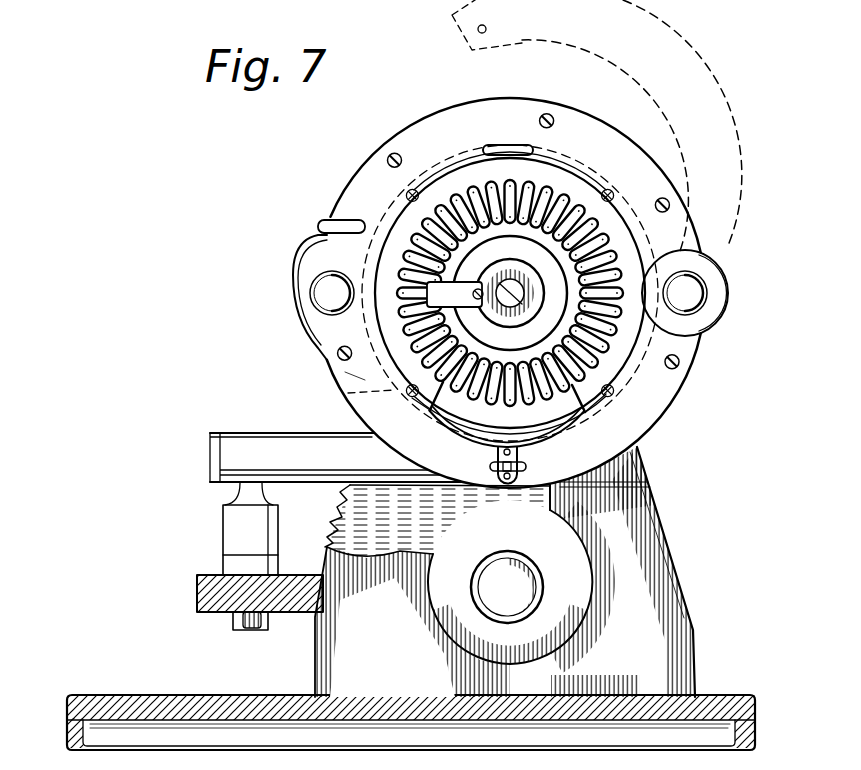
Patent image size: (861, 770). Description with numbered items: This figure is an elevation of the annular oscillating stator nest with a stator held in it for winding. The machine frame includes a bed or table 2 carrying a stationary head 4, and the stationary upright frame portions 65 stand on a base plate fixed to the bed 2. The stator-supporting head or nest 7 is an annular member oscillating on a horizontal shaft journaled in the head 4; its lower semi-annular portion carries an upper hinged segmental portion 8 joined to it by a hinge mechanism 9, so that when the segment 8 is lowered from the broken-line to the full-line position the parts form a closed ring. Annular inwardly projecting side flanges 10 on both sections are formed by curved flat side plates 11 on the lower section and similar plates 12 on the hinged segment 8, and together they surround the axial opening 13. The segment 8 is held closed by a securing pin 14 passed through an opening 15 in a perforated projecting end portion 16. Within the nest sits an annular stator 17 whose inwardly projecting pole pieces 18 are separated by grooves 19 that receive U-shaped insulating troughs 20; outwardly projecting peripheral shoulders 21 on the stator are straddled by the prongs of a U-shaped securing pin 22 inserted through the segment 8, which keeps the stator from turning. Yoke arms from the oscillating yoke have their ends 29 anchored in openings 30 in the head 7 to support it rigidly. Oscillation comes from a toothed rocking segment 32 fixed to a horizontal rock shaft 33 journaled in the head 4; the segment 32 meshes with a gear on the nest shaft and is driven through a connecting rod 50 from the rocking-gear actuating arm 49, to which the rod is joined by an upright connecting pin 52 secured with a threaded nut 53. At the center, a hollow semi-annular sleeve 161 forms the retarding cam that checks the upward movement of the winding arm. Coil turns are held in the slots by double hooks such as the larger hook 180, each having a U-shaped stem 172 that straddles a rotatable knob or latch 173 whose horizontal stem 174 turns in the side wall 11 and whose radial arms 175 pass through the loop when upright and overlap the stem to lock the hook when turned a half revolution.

The bed or table 2 is at (143, 695).
The stationary head 4 is at (690, 656).
The oscillating stator-supporting head or nest 7 is at (675, 377).
The upper hinged segmental portion 8 is at (690, 53).
The hinge mechanism 9 is at (702, 292).
The annular inwardly projecting side flanges 10 is at (348, 393).
The curved or segmental flat side plates 11 is at (340, 374).
The curved or segmental flat side plates 12 is at (606, 138).
The axial opening 13 is at (447, 182).
The securing pin 14 is at (322, 222).
The opening 15 is at (478, 30).
The perforated projecting end portion 16 is at (452, 15).
The annular stator 17 is at (556, 165).
The inwardly projecting pole pieces 18 is at (587, 208).
The grooves 19 is at (614, 204).
The insulating troughs 20 is at (580, 322).
The outwardly projecting peripheral shoulders 21 is at (523, 146).
The U-shaped securing pin 22 is at (492, 146).
The opposite ends of yoke arms 29 is at (320, 287).
The openings 30 is at (321, 297).
The toothed rocking or oscillating segment 32 is at (336, 531).
The horizontal rock shaft 33 is at (508, 620).
The inner rocking-gear actuating arm 49 is at (197, 592).
The connecting rod 50 is at (247, 440).
The upright connecting pin 52 is at (236, 526).
The threaded nut 53 is at (245, 628).
The stationary upright frame portions 65 is at (655, 522).
The hollow semi-annular sleeve 161 is at (511, 291).
The U-shaped stem 172 is at (496, 477).
The rotative or circumferentially adjustable knob or latch 173 is at (494, 463).
The horizontal stem 174 is at (511, 466).
The narrow elongated radial arms 175 is at (512, 478).
The hook 180 is at (566, 417).